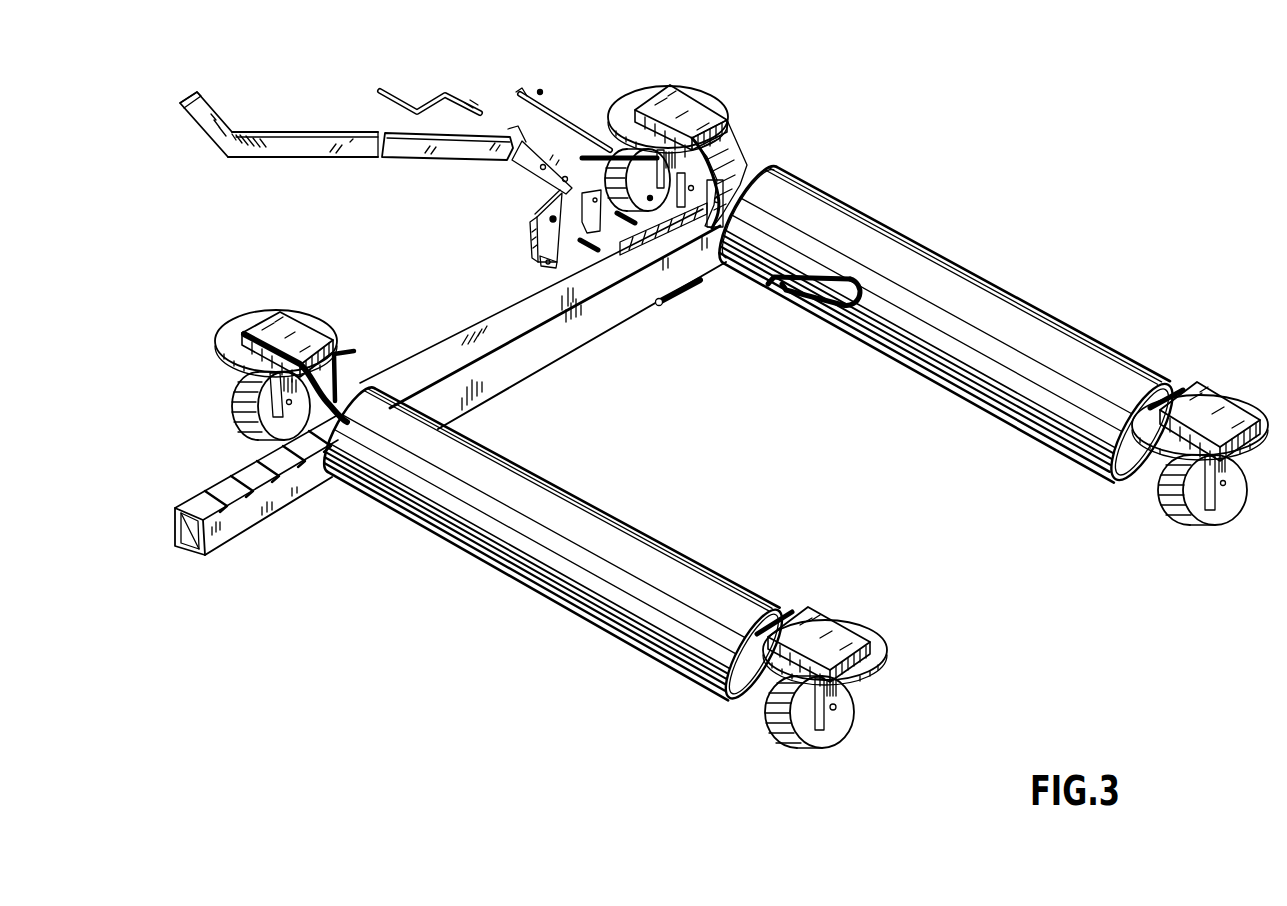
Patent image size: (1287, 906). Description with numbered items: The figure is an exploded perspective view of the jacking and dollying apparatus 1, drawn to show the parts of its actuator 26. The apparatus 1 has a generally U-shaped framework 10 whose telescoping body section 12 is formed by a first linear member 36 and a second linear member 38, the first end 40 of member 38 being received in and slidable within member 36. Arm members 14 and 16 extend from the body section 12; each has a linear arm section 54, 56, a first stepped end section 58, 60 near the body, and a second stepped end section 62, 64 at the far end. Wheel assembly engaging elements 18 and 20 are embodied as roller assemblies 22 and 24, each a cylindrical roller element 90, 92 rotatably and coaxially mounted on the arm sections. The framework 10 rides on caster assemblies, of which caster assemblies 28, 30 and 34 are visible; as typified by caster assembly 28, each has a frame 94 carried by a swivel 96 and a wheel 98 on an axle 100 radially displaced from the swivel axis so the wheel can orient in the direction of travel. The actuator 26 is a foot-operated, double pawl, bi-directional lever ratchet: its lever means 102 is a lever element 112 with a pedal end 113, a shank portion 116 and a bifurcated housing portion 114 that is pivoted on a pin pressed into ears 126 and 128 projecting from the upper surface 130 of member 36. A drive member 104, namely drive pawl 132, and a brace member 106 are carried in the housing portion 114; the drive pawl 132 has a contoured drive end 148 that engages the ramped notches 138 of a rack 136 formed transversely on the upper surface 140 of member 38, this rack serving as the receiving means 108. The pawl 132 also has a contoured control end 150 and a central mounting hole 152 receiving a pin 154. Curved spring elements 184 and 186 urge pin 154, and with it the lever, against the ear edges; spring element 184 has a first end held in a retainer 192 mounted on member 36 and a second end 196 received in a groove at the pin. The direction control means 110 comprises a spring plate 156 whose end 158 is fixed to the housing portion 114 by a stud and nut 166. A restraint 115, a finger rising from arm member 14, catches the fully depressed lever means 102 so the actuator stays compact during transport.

The apparatus 1 is at (1016, 565).
The framework 10 is at (456, 306).
The body section 12 is at (612, 345).
The arm member 14 is at (793, 608).
The arm member 16 is at (1178, 387).
The wheel assembly engaging element 18 is at (517, 598).
The wheel assembly engaging element 20 is at (1000, 270).
The roller assembly 22 is at (612, 517).
The roller assembly 24 is at (903, 360).
The actuator 26 is at (441, 228).
The caster assembly 28 is at (798, 747).
The caster assembly 30 is at (234, 400).
The caster assembly 34 is at (1196, 527).
The first linear member 36 is at (502, 380).
The second linear member 38 is at (289, 497).
The first end 40 is at (187, 553).
The linear arm section 54 is at (367, 380).
The linear arm section 56 is at (764, 168).
The first stepped end section 58 is at (253, 320).
The first stepped end section 60 is at (706, 106).
The second stepped end section 62 is at (827, 620).
The second stepped end section 64 is at (1231, 398).
The cylindrical roller element 90 is at (526, 476).
The cylindrical roller element 92 is at (858, 225).
The frame 94 is at (841, 693).
The swivel 96 is at (883, 667).
The wheel 98 is at (810, 733).
The axle 100 is at (838, 708).
The lever means 102 is at (313, 158).
The drive member 104 is at (530, 238).
The brace member 106 is at (592, 187).
The receiving means 108 is at (647, 268).
The direction control means 110 is at (454, 92).
The lever element 112 is at (326, 131).
The pedal end 113 is at (212, 150).
The housing portion 114 is at (514, 173).
The restraint 115 is at (340, 350).
The shank portion 116 is at (437, 152).
The ear 126 is at (725, 198).
The ear 128 is at (742, 146).
The upper surface 130 is at (514, 325).
The drive pawl 132 is at (540, 256).
The rack 136 is at (258, 452).
The ramped notches 138 is at (240, 512).
The upper surface 140 is at (177, 503).
The drive end 148 is at (539, 262).
The control end 150 is at (554, 197).
The mounting hole 152 is at (534, 221).
The pin 154 is at (583, 246).
The spring plate 156 is at (564, 118).
The end 158 is at (524, 96).
The nut 166 is at (541, 90).
The curved spring element 184 is at (866, 285).
The curved spring element 186 is at (823, 320).
The retainer 192 is at (692, 287).
The second end 196 is at (778, 297).